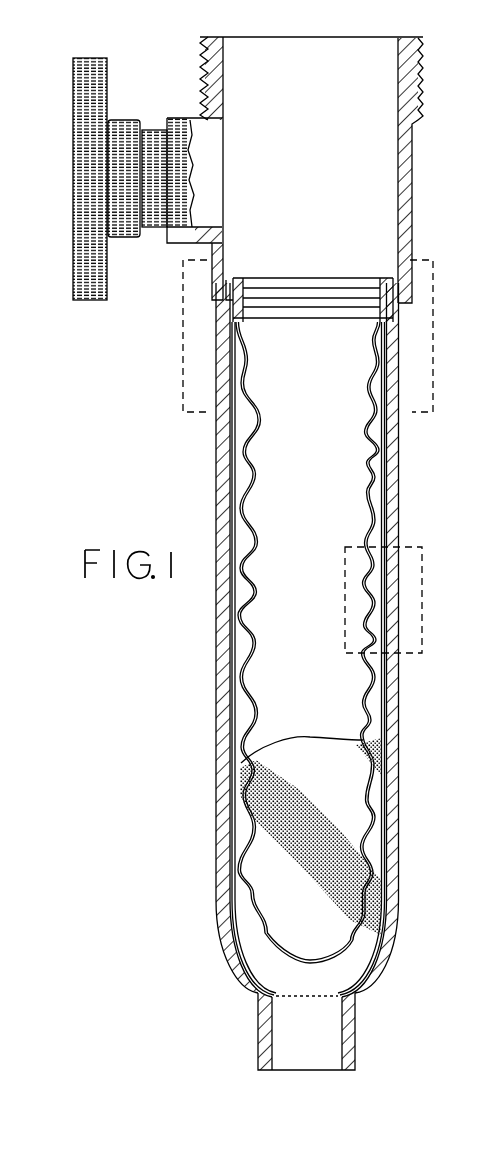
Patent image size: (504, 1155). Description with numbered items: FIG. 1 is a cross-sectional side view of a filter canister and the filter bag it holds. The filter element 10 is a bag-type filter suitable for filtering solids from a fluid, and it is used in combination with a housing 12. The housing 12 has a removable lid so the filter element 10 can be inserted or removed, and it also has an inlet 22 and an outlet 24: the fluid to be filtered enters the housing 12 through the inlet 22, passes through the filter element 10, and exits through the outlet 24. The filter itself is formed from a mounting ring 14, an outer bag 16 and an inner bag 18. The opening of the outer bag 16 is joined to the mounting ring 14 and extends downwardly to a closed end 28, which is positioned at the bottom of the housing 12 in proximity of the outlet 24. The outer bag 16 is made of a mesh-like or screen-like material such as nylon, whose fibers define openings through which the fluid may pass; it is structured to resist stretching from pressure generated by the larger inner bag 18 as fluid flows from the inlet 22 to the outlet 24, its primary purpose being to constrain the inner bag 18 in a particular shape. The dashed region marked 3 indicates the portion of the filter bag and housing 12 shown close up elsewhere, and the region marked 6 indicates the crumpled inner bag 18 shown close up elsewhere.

The filter element 10 is at (293, 260).
The housing 12 is at (430, 66).
The mounting ring 14 is at (357, 279).
The outer bag 16 is at (383, 467).
The inner bag 18 is at (377, 491).
The inlet 22 is at (75, 278).
The outlet 24 is at (330, 1072).
The closed end 28 is at (309, 988).
The portion of the filter bag and housing 3 is at (183, 393).
The inner bag as crumpled 6 is at (423, 579).